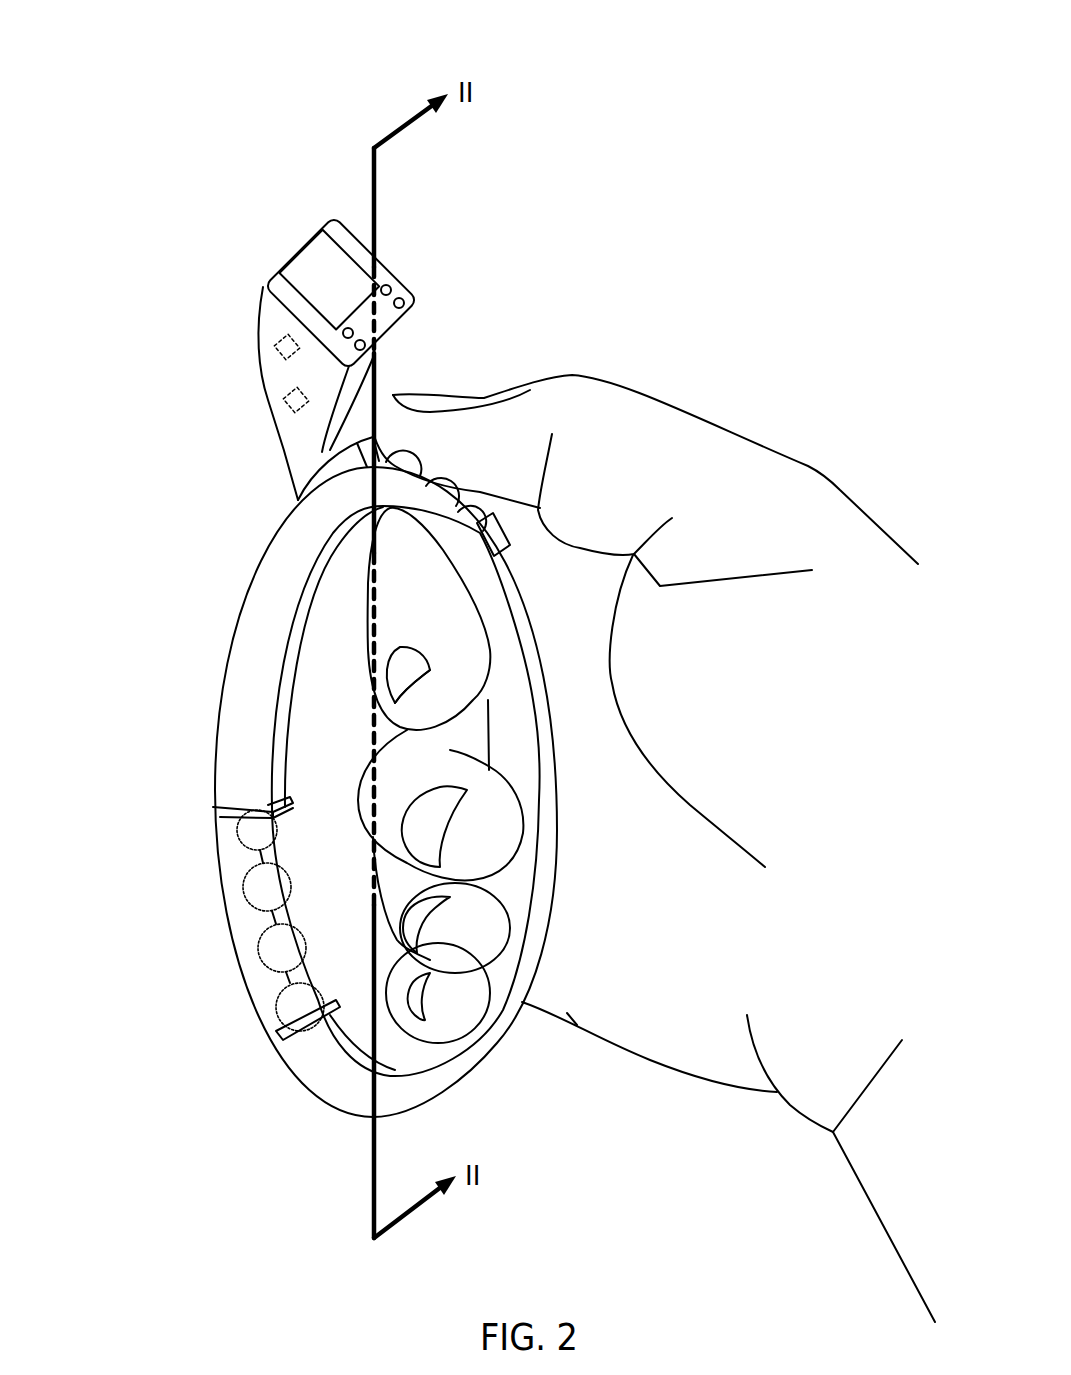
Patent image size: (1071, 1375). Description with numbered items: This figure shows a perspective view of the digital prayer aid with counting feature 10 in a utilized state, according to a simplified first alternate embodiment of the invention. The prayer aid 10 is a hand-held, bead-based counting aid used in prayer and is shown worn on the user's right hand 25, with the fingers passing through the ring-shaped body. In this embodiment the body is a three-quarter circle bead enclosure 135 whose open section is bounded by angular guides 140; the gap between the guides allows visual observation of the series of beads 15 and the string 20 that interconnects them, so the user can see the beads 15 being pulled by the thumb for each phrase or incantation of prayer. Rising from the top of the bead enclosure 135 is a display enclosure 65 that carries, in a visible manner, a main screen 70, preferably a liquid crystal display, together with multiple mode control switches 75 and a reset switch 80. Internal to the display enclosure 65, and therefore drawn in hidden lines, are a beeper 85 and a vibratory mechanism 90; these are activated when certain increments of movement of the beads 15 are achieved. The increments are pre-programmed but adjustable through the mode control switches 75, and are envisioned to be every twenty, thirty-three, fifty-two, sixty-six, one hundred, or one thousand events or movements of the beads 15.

The digital prayer aid with counting feature 10 is at (118, 180).
The beads 15 is at (243, 893).
The string 20 is at (267, 918).
The right hand 25 is at (815, 552).
The display enclosure 65 is at (273, 390).
The main screen 70 is at (327, 255).
The mode control switches 75 is at (390, 287).
The reset switch 80 is at (343, 331).
The beeper 85 is at (277, 340).
The vibratory mechanism 90 is at (290, 412).
The three-quarter circle bead enclosure 135 is at (478, 1045).
The angular guides 140 is at (215, 810).